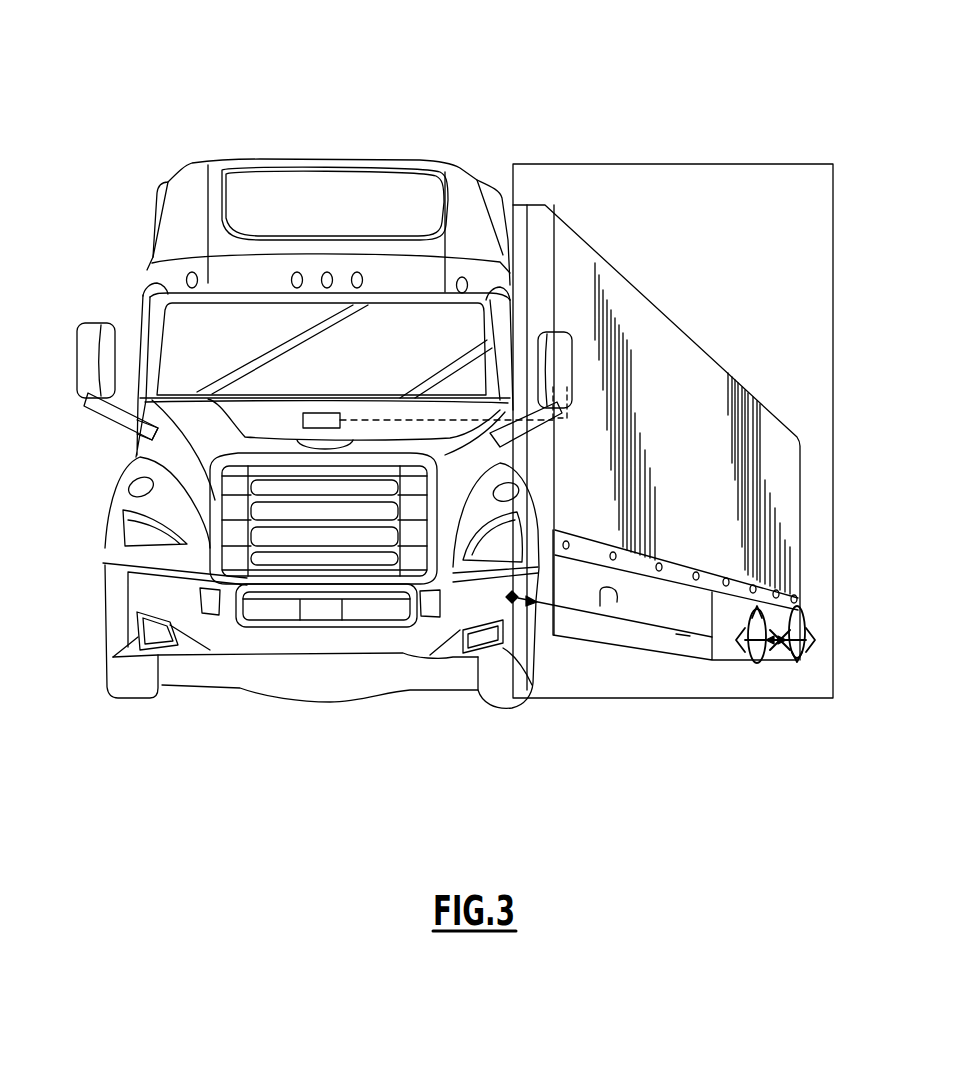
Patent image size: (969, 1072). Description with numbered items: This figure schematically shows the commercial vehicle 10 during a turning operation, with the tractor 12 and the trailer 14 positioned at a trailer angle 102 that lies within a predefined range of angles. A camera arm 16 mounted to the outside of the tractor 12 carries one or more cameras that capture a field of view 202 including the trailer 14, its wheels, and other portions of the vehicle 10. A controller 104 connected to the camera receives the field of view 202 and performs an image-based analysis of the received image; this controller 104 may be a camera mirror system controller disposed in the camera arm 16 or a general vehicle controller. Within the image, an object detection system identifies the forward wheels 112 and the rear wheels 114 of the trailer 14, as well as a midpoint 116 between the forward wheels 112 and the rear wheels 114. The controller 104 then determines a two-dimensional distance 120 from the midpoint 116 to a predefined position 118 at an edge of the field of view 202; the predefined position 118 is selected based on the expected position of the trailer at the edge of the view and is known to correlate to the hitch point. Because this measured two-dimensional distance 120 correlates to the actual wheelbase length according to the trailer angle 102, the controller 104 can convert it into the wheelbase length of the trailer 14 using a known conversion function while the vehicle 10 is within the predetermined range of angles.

The commercial vehicle 10 is at (80, 74).
The tractor 12 is at (278, 160).
The trailer 14 is at (703, 350).
The camera arm 16 is at (573, 370).
The controller 104 is at (316, 413).
The field of view 202 is at (797, 164).
The predefined position 118 is at (512, 597).
The trailer angle 102 is at (617, 602).
The two-dimensional distance 120 is at (682, 632).
The forward wheels 112 is at (762, 668).
The rear wheels 114 is at (808, 632).
The midpoint 116 is at (760, 662).